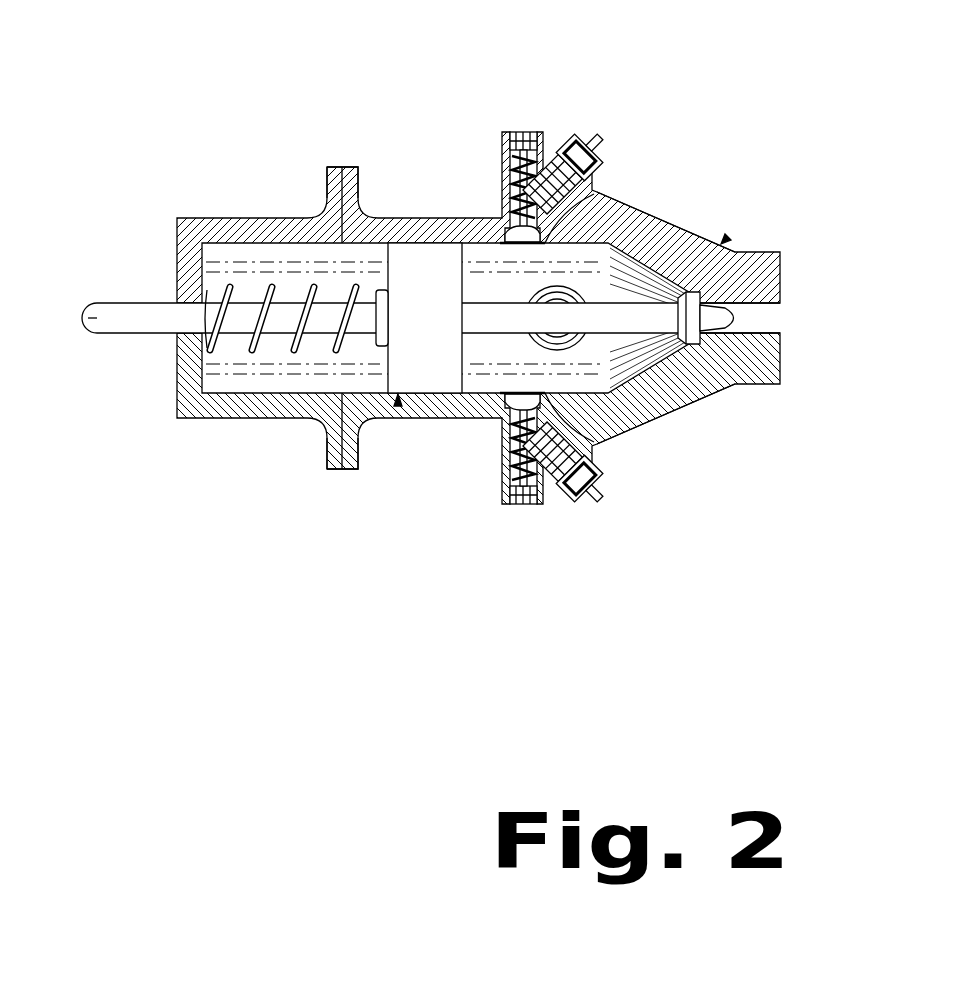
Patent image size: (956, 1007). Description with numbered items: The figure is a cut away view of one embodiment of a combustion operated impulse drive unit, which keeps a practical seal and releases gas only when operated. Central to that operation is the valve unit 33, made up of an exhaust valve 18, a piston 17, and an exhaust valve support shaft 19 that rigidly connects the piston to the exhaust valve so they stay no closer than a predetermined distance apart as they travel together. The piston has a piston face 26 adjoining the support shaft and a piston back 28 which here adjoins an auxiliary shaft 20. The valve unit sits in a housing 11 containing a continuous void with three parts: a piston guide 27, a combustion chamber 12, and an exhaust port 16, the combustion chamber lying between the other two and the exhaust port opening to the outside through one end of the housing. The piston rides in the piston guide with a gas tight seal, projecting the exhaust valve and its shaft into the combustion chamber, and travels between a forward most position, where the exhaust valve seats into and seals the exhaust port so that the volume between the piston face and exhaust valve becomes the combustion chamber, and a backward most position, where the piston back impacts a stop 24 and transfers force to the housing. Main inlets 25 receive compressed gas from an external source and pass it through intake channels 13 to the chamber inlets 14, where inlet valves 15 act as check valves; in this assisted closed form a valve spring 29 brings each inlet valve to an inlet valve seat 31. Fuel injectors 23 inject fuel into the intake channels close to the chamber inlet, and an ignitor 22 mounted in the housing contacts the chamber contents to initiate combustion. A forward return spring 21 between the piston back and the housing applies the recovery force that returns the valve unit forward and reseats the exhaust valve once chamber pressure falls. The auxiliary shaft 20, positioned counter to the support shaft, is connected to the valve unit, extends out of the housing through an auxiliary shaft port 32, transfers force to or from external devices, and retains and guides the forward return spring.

The housing 11 is at (723, 242).
The combustion chamber 12 is at (655, 213).
The intake channels 13 is at (530, 137).
The chamber inlets 14 is at (505, 217).
The inlet valves 15 is at (507, 232).
The exhaust port 16 is at (782, 320).
The piston 17 is at (428, 322).
The exhaust valve 18 is at (712, 322).
The exhaust valve support shaft 19 is at (600, 318).
The auxiliary shaft 20 is at (96, 318).
The forward return spring 21 is at (268, 292).
The ignitor 22 is at (618, 200).
The fuel injectors 23 is at (572, 150).
The stop 24 is at (333, 260).
The main inlets 25 is at (515, 137).
The piston face 26 is at (476, 240).
The piston guide 27 is at (386, 392).
The piston back 28 is at (360, 238).
The valve spring 29 is at (466, 74).
The inlet valve seat 31 is at (603, 238).
The auxiliary shaft port 32 is at (176, 303).
The valve unit 33 is at (397, 400).